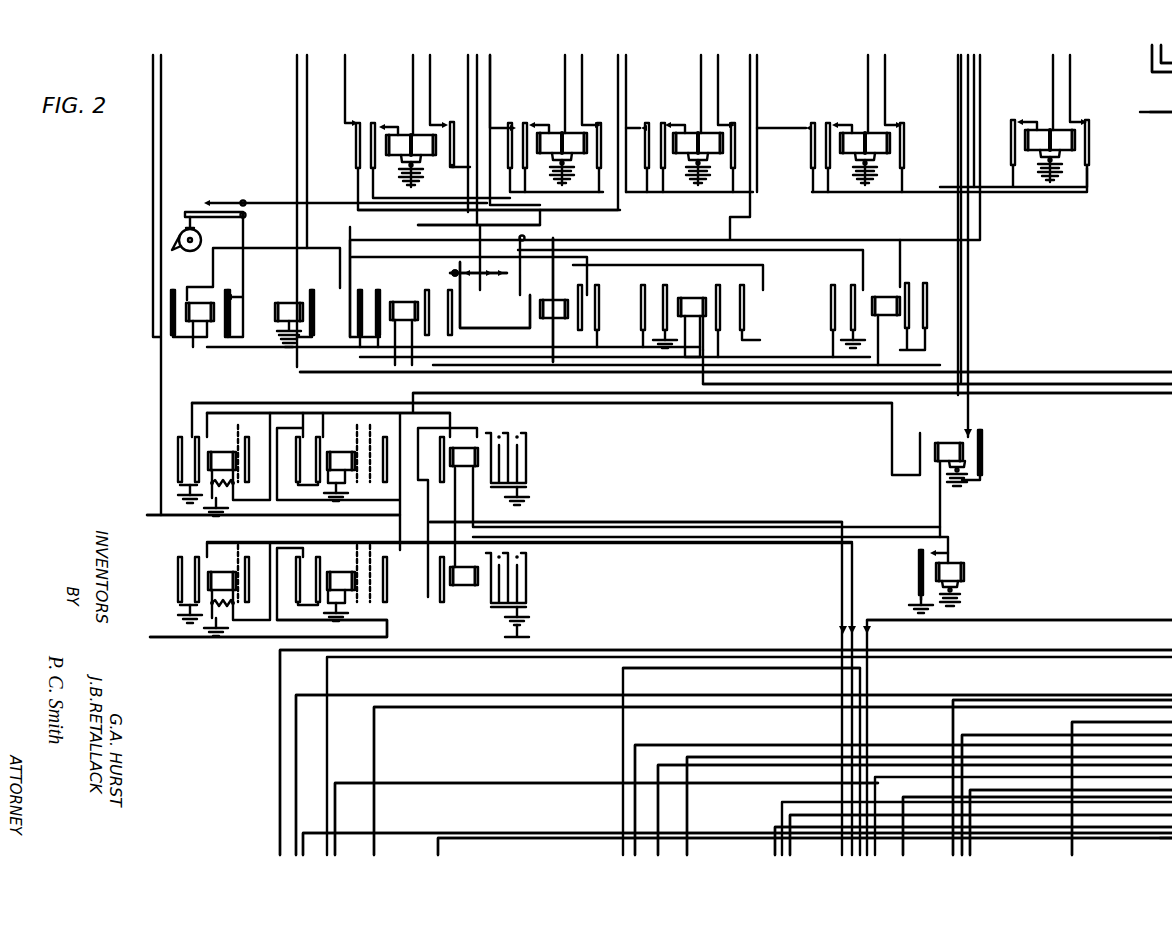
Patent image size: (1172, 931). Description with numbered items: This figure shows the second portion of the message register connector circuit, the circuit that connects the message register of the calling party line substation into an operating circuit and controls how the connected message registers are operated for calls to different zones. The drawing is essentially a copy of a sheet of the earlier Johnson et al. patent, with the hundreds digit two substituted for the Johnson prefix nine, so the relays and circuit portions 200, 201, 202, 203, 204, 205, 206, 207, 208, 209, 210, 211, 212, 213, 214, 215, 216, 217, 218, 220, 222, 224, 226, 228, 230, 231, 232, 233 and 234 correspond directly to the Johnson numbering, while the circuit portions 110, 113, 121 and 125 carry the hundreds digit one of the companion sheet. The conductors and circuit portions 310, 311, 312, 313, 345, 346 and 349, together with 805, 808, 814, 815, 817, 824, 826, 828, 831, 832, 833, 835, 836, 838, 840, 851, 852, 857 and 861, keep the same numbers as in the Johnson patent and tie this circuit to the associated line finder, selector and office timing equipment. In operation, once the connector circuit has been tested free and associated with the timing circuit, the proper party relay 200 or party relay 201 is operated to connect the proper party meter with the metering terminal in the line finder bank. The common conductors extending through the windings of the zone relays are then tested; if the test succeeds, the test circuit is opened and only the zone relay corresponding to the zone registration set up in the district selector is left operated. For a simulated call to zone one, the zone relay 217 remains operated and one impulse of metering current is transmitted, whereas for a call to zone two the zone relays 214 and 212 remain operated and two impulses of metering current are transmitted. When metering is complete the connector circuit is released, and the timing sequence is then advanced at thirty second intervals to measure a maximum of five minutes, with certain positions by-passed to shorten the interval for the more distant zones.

The supply conduit 110 is at (491, 75).
The conduit 113 is at (468, 100).
The conduit 121 is at (958, 97).
The pressure conduit 125 is at (163, 148).
The party relay 200 is at (464, 585).
The party relay 201 is at (463, 448).
The valve 202 is at (966, 573).
The conduit 203 is at (758, 542).
The conduit 204 is at (758, 521).
The valve 205 is at (342, 572).
The valve 206 is at (222, 572).
The conduit 207 is at (389, 621).
The valve 208 is at (339, 452).
The valve 209 is at (222, 452).
The conduit 210 is at (320, 517).
The valve 211 is at (949, 443).
The zone relay 212 is at (715, 318).
The valve 213 is at (288, 300).
The zone relay 214 is at (397, 303).
The valve 215 is at (540, 307).
The valve 216 is at (198, 300).
The zone relay 217 is at (900, 306).
The pump 218 is at (188, 212).
The valve 220 is at (1062, 132).
The valve 222 is at (863, 133).
The valve 224 is at (693, 133).
The valve 226 is at (558, 133).
The valve 228 is at (404, 135).
The conduit 230 is at (542, 258).
The conduit 231 is at (562, 213).
The restriction 232 is at (520, 283).
The conduit 233 is at (440, 263).
The conduit 234 is at (473, 321).
The conduit 310 is at (1166, 838).
The conduit 311 is at (280, 673).
The conduit 312 is at (752, 694).
The conduit 313 is at (430, 832).
The conduit 345 is at (1156, 732).
The conduit 346 is at (795, 835).
The conduit 349 is at (1086, 646).
The conduit 805 is at (972, 847).
The conduit 808 is at (535, 782).
The conduit 814 is at (826, 765).
The conduit 815 is at (823, 744).
The conduit 817 is at (753, 755).
The conduit 824 is at (1152, 70).
The conduit 826 is at (1145, 75).
The conduit 828 is at (946, 668).
The conduit 831 is at (1070, 724).
The conduit 832 is at (1050, 697).
The conduit 833 is at (1110, 392).
The conduit 835 is at (1085, 397).
The conduit 836 is at (736, 345).
The conduit 838 is at (1150, 400).
The conduit 840 is at (1058, 383).
The conduit 851 is at (900, 797).
The conduit 852 is at (532, 712).
The conduit 857 is at (773, 847).
The conduit 861 is at (1158, 112).